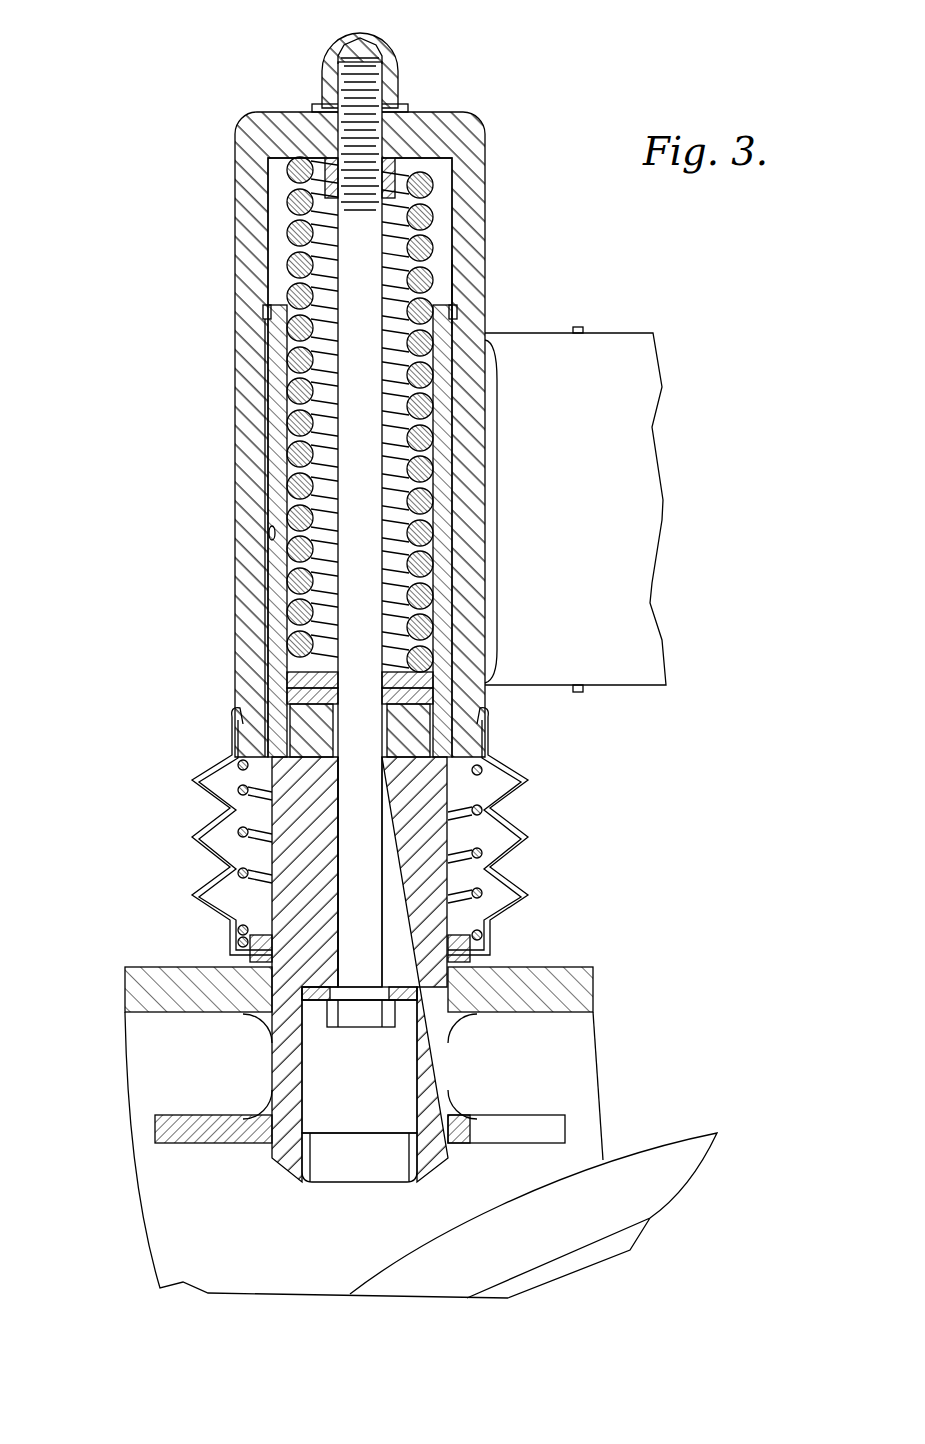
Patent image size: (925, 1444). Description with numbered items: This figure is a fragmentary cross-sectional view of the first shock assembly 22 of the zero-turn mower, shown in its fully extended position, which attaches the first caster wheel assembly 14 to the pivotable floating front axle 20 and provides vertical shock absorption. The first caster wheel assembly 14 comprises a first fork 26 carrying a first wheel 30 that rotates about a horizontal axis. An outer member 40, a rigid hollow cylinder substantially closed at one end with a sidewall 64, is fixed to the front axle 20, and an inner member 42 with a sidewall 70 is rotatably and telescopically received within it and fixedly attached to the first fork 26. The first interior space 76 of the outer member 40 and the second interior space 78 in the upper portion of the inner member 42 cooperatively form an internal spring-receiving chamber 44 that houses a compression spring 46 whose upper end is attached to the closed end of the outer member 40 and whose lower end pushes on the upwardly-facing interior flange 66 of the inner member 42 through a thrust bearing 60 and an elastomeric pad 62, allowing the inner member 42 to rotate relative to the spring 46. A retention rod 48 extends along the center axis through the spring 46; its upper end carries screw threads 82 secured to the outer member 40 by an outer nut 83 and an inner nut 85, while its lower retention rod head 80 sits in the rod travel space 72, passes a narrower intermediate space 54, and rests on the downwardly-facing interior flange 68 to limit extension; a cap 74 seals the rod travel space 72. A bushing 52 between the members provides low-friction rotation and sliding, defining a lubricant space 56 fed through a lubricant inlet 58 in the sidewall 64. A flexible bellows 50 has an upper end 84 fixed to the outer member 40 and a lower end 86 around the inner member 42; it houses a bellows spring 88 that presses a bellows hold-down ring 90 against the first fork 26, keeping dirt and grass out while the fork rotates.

The first caster wheel assembly 14 is at (590, 966).
The floating front axle 20 is at (640, 356).
The first shock assembly 22 is at (272, 90).
The first fork 26 is at (580, 1040).
The first wheel 30 is at (690, 1140).
The outer member 40 is at (250, 130).
The inner member 42 is at (420, 790).
The internal spring-receiving chamber 44 is at (270, 178).
The compression spring 46 is at (298, 197).
The retention rod 48 is at (366, 235).
The flexible bellows 50 is at (520, 835).
The bushing 52 is at (270, 396).
The intermediate space 54 is at (330, 815).
The lubricant space 56 is at (260, 493).
The lubricant inlet 58 is at (268, 533).
The thrust bearing 60 is at (428, 700).
The elastomeric pad 62 is at (405, 720).
The sidewall 64 is at (480, 318).
The interior flange 66 is at (456, 745).
The interior flange 68 is at (388, 984).
The sidewall 70 is at (462, 290).
The rod travel space 72 is at (340, 1088).
The cap 74 is at (343, 1160).
The first interior space 76 is at (440, 190).
The second interior space 78 is at (283, 346).
The retention rod head 80 is at (368, 1015).
The screw threads 82 is at (370, 75).
The outer nut 83 is at (390, 88).
The upper end 84 is at (234, 722).
The inner nut 85 is at (388, 166).
The lower end 86 is at (486, 958).
The bellows spring 88 is at (472, 886).
The bellows hold-down ring 90 is at (242, 956).